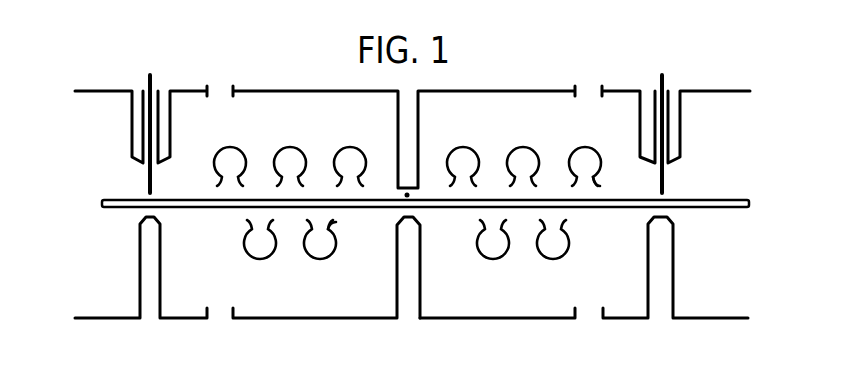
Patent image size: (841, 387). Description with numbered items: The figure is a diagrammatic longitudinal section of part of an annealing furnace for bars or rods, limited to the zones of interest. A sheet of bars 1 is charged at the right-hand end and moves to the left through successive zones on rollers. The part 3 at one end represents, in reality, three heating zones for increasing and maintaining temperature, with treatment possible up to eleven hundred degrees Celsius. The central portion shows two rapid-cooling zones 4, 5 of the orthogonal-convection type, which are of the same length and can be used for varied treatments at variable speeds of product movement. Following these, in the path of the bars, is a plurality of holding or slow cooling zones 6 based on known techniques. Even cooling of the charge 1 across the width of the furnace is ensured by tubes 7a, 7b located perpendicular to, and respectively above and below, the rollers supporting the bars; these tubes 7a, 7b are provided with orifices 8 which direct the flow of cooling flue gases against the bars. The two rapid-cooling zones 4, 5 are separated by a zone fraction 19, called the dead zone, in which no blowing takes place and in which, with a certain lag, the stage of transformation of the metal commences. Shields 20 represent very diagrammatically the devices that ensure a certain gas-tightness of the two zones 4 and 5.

The sheet of bars 1 is at (698, 200).
The heating part 3 is at (697, 297).
The rapid-cooling zone 4 is at (300, 303).
The rapid-cooling zone 5 is at (518, 297).
The holding or slow cooling zones 6 is at (98, 297).
The upper tubes 7a is at (336, 160).
The lower tubes 7b is at (248, 261).
The orifices 8 is at (596, 184).
The dead zone 19 is at (407, 195).
The shields 20 is at (152, 80).